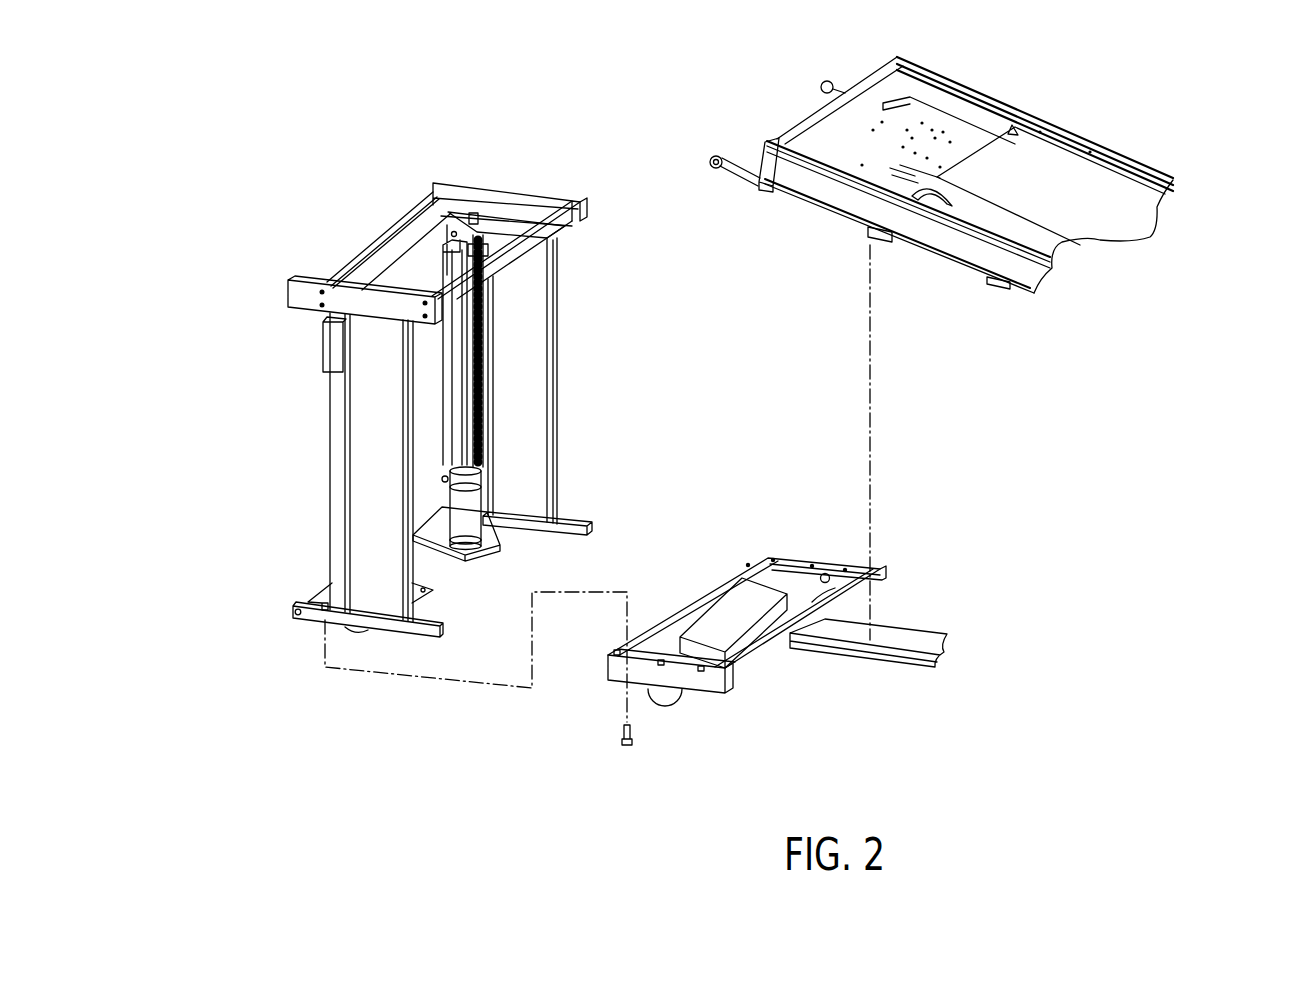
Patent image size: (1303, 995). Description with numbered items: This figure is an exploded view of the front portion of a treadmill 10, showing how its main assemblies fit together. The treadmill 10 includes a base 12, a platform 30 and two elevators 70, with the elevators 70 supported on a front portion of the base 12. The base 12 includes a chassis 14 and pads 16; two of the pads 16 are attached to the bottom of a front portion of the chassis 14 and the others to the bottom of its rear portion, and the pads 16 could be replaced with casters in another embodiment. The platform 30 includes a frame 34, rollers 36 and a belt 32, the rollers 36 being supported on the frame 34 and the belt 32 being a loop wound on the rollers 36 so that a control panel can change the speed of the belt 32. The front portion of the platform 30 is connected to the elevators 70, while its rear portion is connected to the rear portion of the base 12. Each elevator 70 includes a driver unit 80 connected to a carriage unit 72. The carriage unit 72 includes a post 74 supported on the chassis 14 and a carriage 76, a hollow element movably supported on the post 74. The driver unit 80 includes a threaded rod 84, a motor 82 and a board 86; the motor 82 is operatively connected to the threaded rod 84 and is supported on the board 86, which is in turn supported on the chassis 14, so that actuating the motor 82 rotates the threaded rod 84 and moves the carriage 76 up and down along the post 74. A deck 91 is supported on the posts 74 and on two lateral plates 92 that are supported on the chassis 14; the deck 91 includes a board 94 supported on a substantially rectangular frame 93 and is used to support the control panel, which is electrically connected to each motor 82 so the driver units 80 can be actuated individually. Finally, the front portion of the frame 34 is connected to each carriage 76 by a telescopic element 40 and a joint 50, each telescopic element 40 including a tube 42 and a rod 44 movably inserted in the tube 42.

The treadmill 10 is at (1233, 65).
The base 12 is at (787, 552).
The chassis 14 is at (895, 633).
The pads 16 is at (677, 706).
The platform 30 is at (1022, 98).
The belt 32 is at (1083, 187).
The frame 34 is at (1020, 270).
The rollers 36 is at (933, 207).
The telescopic element 40 is at (702, 223).
The tube 42 is at (822, 208).
The rod 44 is at (723, 172).
The joint 50 is at (712, 153).
The elevator 70 is at (383, 210).
The carriage unit 72 is at (268, 330).
The post 74 is at (333, 426).
The carriage 76 is at (327, 350).
The driver unit 80 is at (503, 547).
The motor 82 is at (473, 530).
The threaded rod 84 is at (486, 406).
The board 86 is at (438, 537).
The deck 91 is at (574, 104).
The lateral plates 92 is at (534, 293).
The frame 93 is at (497, 217).
The board 94 is at (510, 188).